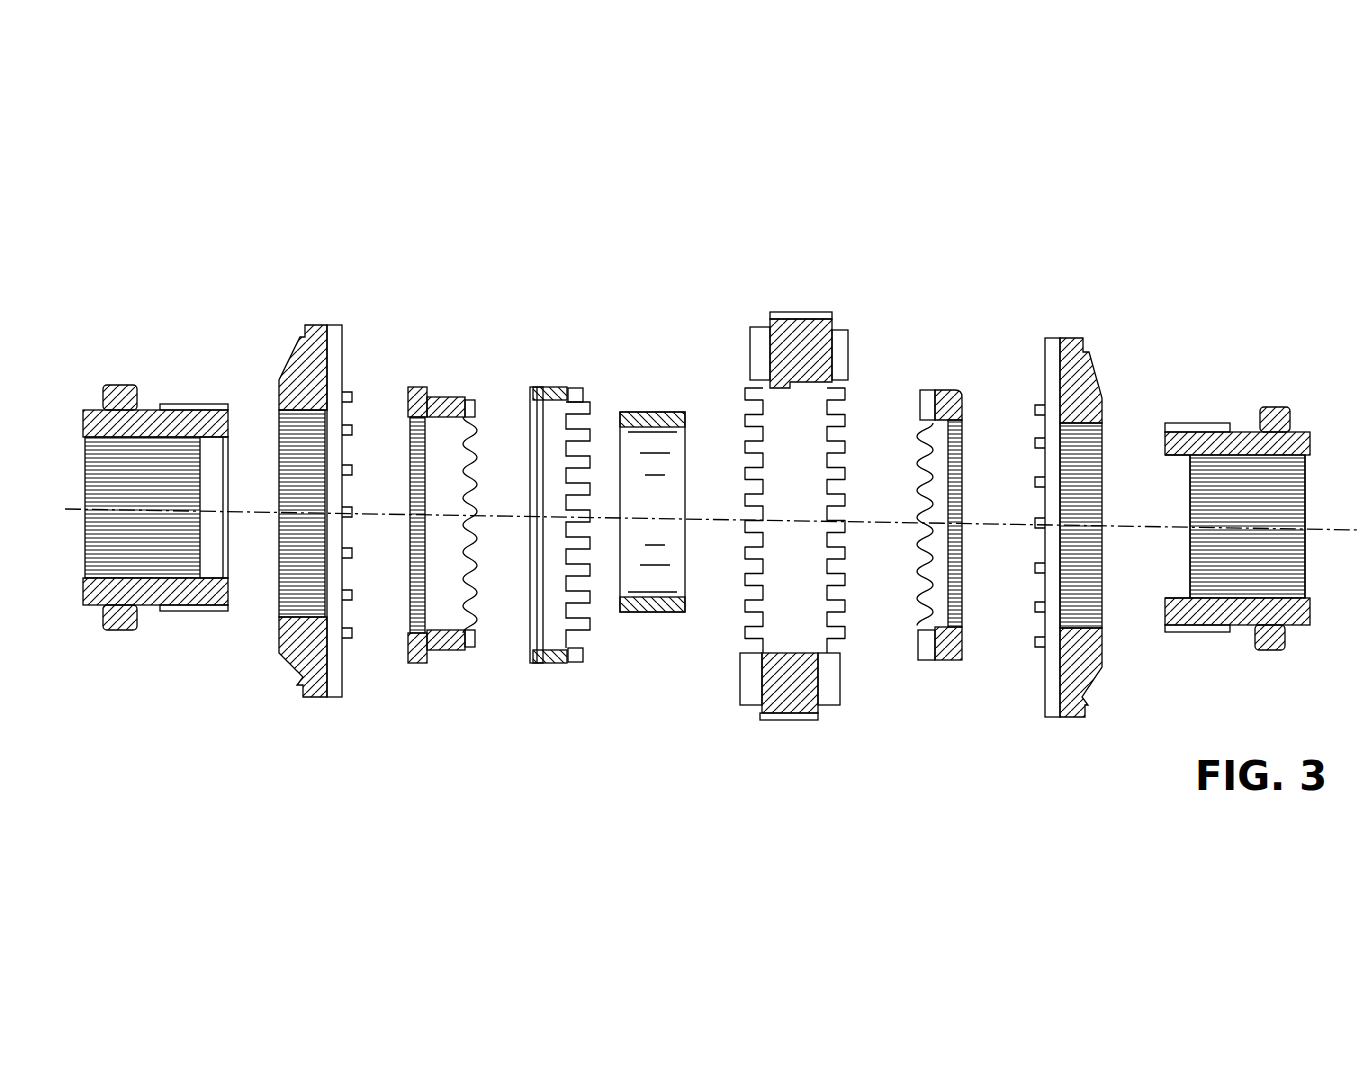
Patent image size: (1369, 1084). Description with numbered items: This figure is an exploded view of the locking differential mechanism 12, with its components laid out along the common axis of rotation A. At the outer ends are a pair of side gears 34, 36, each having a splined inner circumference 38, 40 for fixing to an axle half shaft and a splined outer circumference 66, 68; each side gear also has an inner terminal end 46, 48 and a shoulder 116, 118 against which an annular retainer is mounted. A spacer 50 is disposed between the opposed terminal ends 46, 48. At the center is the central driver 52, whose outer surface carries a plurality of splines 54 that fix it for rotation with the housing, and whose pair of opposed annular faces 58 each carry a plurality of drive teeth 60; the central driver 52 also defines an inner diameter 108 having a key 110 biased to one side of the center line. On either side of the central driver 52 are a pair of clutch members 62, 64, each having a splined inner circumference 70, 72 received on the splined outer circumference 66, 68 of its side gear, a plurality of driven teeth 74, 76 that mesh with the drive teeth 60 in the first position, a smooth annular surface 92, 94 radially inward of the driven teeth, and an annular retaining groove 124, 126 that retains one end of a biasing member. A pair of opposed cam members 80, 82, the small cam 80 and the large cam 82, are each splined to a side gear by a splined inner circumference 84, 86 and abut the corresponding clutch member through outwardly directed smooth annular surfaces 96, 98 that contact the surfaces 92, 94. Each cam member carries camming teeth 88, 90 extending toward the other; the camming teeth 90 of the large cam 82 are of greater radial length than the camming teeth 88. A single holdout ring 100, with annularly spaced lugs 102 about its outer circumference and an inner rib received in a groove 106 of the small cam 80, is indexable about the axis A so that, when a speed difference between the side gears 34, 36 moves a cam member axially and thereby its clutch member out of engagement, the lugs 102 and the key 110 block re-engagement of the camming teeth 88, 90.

The locking differential mechanism 12 is at (148, 693).
The side gear 34 is at (160, 365).
The side gear 36 is at (1265, 375).
The splined inner circumference 38 is at (105, 578).
The splined inner circumference 40 is at (1290, 600).
The inner terminal end 46 is at (228, 608).
The inner terminal end 48 is at (1082, 640).
The spacer 50 is at (655, 598).
The central driver 52 is at (830, 300).
The splines 54 is at (800, 320).
The opposed annular faces 58 is at (765, 330).
The drive teeth 60 is at (750, 352).
The clutch member 62 is at (330, 322).
The clutch member 64 is at (1095, 330).
The splined outer circumference 66 is at (175, 407).
The splined outer circumference 68 is at (1200, 428).
The splined inner circumference 70 is at (300, 418).
The splined inner circumference 72 is at (1082, 432).
The driven teeth 74 is at (342, 330).
The driven teeth 76 is at (1050, 343).
The cam member 80 is at (460, 398).
The cam member 82 is at (950, 390).
The splined inner circumference 84 is at (415, 432).
The splined inner circumference 86 is at (945, 425).
The camming teeth 88 is at (470, 400).
The camming teeth 90 is at (930, 390).
The smooth annular surface 92 is at (344, 402).
The smooth annular surface 94 is at (1043, 412).
The smooth annular surface 96 is at (413, 392).
The smooth annular surface 98 is at (962, 405).
The holdout ring 100 is at (545, 368).
The lugs 102 is at (575, 388).
The groove 106 is at (440, 398).
The inner diameter 108 is at (805, 652).
The key 110 is at (760, 386).
The shoulder 116 is at (115, 388).
The shoulder 118 is at (1278, 407).
The annular retaining groove 124 is at (305, 340).
The annular retaining groove 126 is at (1100, 362).
The axis A is at (1315, 528).